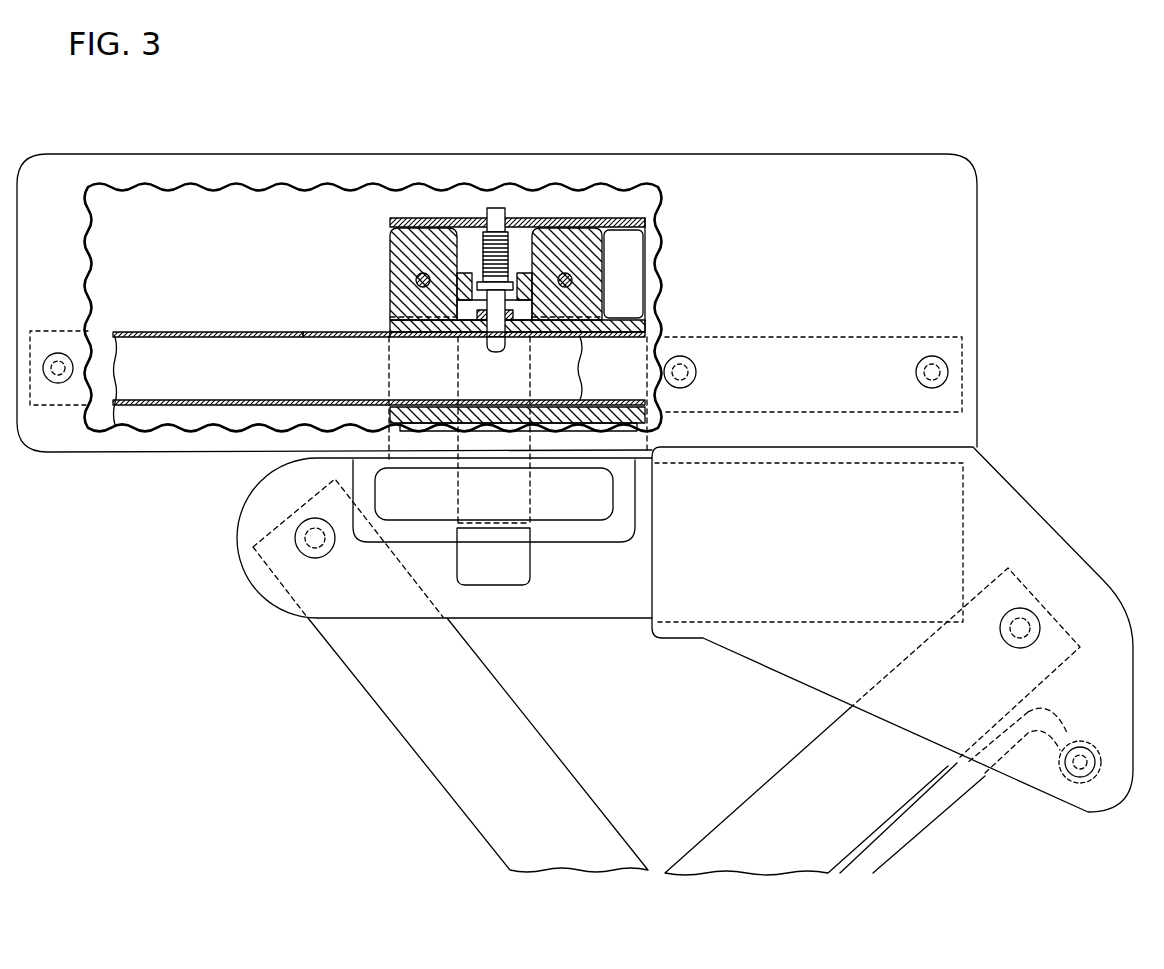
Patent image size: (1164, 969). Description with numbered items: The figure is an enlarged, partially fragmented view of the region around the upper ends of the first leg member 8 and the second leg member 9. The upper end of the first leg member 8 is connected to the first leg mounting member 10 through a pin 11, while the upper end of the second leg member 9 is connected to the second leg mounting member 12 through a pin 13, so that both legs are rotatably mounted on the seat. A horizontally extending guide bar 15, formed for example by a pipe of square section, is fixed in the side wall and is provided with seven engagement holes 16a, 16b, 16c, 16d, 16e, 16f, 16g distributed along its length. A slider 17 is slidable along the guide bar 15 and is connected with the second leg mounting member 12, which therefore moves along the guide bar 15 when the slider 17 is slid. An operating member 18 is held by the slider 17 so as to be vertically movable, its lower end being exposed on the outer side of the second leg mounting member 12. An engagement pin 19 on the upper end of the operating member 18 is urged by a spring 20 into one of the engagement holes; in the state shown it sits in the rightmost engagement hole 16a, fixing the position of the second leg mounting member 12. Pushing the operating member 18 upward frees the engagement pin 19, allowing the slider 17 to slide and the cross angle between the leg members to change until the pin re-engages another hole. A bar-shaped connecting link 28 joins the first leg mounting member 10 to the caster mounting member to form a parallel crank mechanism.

The first leg member 8 is at (780, 783).
The second leg member 9 is at (435, 770).
The first leg mounting member 10 is at (1022, 510).
The pin 11 is at (1033, 615).
The second leg mounting member 12 is at (245, 518).
The pin 13 is at (297, 547).
The guide bar 15 is at (117, 332).
The engagement hole 16a is at (490, 353).
The engagement hole 16b is at (440, 337).
The engagement hole 16c is at (390, 337).
The engagement hole 16d is at (341, 332).
The engagement hole 16e is at (295, 337).
The engagement hole 16f is at (242, 332).
The engagement hole 16g is at (192, 337).
The slider 17 is at (648, 327).
The operating member 18 is at (507, 575).
The engagement pin 19 is at (495, 322).
The spring 20 is at (390, 244).
The connecting link 28 is at (928, 817).